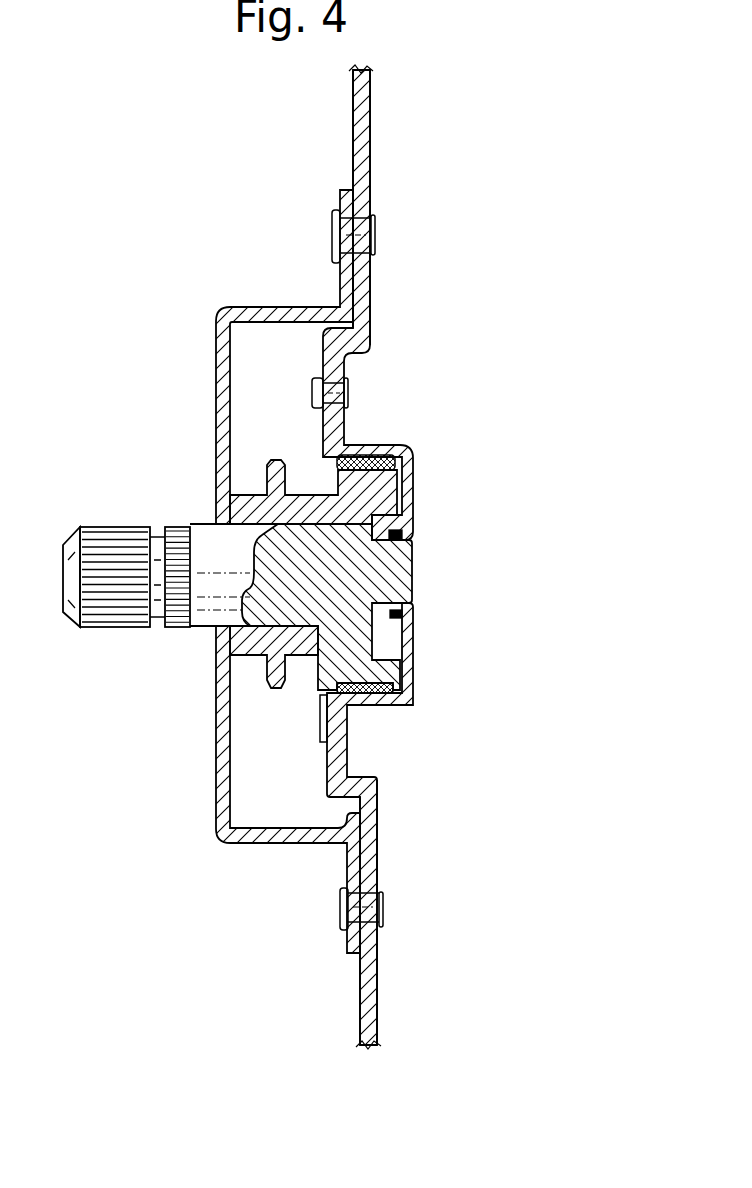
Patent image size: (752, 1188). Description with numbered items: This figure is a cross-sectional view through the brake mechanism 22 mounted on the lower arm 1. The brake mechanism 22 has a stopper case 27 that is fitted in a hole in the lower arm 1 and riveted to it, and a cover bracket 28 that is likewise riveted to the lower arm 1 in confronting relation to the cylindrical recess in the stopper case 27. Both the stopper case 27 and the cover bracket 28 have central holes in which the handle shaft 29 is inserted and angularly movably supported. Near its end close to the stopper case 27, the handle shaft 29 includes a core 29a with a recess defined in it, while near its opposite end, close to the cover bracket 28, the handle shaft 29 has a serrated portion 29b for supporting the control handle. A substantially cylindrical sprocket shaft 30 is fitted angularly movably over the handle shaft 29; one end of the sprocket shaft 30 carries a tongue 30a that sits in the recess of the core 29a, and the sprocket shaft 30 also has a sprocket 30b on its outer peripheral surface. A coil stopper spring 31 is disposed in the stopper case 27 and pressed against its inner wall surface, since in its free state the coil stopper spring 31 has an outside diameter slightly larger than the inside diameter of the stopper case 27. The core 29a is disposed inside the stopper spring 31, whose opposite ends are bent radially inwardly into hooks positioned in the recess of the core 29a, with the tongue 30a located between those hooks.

The lower arm 1 is at (374, 290).
The brake mechanism 22 is at (152, 648).
The stopper case 27 is at (413, 523).
The cover bracket 28 is at (216, 420).
The handle shaft 29 is at (405, 590).
The core 29a is at (395, 678).
The serrated portion 29b is at (118, 527).
The sprocket shaft 30 is at (308, 505).
The tongue 30a is at (397, 492).
The sprocket 30b is at (277, 458).
The coil stopper spring 31 is at (384, 453).